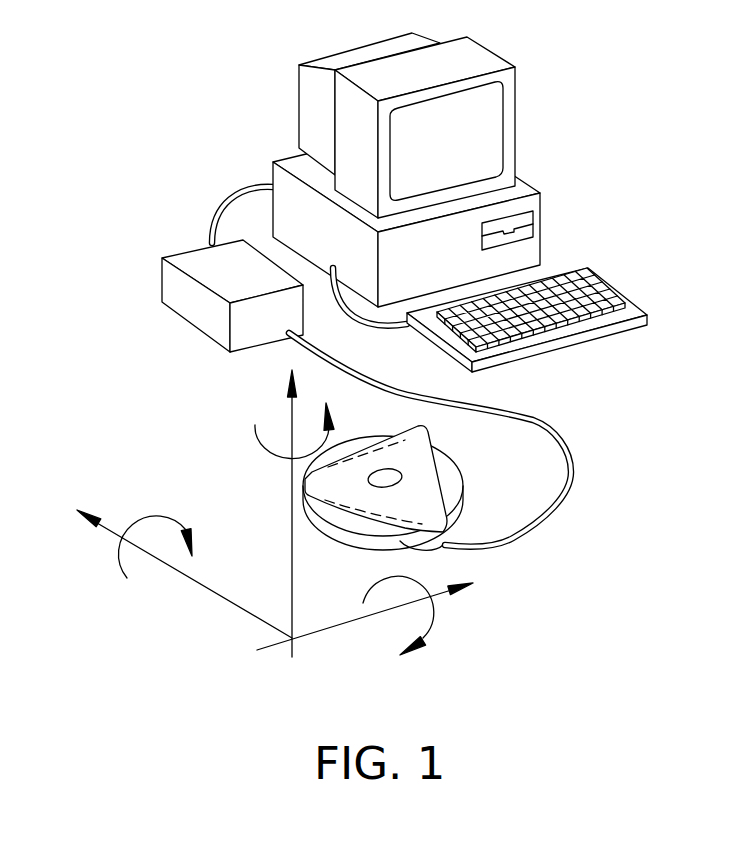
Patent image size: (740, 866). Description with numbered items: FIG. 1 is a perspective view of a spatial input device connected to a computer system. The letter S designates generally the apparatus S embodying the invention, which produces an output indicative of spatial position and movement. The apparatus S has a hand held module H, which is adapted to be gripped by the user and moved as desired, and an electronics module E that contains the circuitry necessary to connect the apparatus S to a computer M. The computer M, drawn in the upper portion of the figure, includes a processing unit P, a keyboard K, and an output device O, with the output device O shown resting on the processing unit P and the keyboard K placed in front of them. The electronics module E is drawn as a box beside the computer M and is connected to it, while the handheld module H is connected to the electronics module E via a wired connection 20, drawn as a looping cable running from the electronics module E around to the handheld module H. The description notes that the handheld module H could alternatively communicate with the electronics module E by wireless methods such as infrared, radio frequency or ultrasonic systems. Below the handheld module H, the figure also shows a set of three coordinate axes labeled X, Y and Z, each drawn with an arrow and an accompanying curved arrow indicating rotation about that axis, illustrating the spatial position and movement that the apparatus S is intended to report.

The output device O is at (487, 43).
The computer M is at (468, 189).
The processing unit P is at (543, 222).
The keyboard K is at (598, 343).
The electronics module E is at (175, 253).
The hand held module H is at (462, 470).
The wired connection 20 is at (575, 472).
The apparatus S is at (284, 513).
The X axis X is at (383, 615).
The Y axis Y is at (184, 556).
The Z axis Z is at (289, 513).